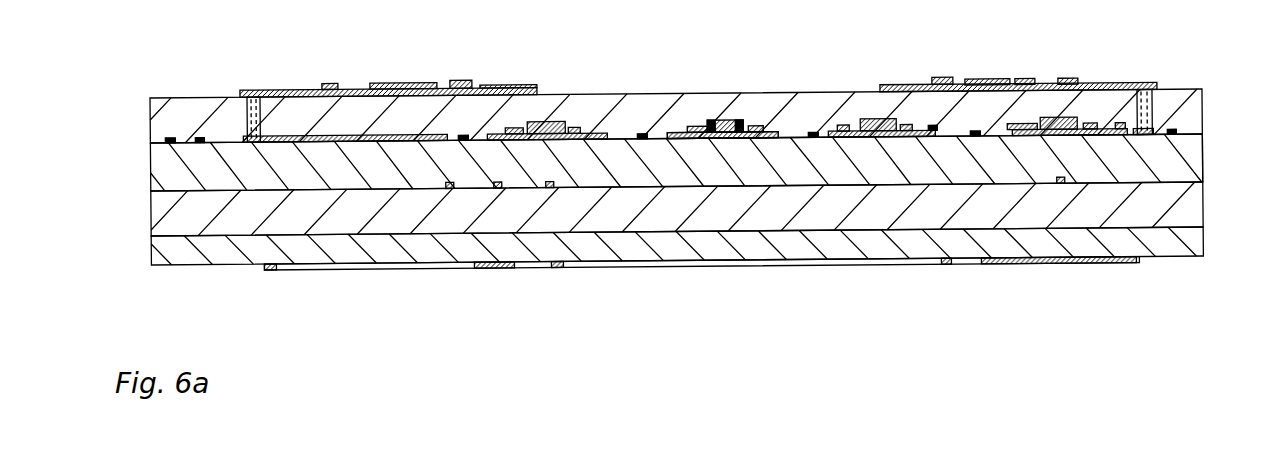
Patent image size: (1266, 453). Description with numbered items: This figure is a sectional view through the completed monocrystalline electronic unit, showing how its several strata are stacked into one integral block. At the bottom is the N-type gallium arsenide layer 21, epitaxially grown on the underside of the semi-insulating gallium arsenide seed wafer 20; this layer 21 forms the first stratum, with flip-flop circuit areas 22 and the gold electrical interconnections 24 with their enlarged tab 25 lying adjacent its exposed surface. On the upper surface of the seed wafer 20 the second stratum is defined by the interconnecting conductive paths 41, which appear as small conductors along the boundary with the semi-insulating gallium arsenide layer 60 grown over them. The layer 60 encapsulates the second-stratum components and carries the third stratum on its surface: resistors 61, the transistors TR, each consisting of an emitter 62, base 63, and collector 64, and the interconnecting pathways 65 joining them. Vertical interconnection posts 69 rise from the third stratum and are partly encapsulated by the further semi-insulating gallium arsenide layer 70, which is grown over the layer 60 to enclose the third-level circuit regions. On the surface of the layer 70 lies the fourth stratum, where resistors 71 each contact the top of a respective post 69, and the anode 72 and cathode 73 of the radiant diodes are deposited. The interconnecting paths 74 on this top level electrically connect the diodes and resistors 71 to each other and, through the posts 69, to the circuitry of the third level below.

The semi-insulating gallium arsenide seed wafer 20 is at (163, 200).
The N-type gallium arsenide layer 21 is at (165, 247).
The flip-flop circuit areas 22 is at (1055, 279).
The electrical interconnections 24 is at (267, 272).
The enlarged tab 25 is at (497, 277).
The interconnecting conductive paths 41 is at (549, 188).
The semi-insulating gallium arsenide layer 60 is at (165, 159).
The resistors 61 is at (1153, 146).
The emitter 62 is at (715, 143).
The base 63 is at (711, 131).
The collector 64 is at (735, 125).
The interconnecting pathways 65 is at (172, 139).
The vertical interconnection posts 69 is at (248, 101).
The semi-insulating gallium arsenide layer 70 is at (160, 109).
The resistors 71 is at (290, 91).
The anode 72 is at (456, 83).
The cathode 73 is at (412, 85).
The interconnecting paths 74 is at (343, 86).
The transistors TR is at (548, 122).